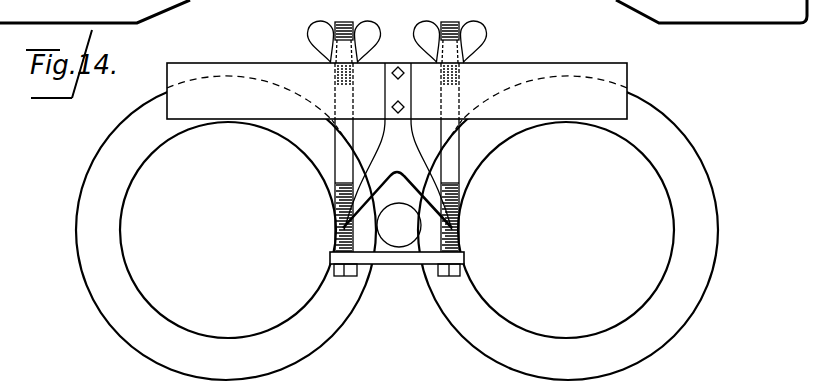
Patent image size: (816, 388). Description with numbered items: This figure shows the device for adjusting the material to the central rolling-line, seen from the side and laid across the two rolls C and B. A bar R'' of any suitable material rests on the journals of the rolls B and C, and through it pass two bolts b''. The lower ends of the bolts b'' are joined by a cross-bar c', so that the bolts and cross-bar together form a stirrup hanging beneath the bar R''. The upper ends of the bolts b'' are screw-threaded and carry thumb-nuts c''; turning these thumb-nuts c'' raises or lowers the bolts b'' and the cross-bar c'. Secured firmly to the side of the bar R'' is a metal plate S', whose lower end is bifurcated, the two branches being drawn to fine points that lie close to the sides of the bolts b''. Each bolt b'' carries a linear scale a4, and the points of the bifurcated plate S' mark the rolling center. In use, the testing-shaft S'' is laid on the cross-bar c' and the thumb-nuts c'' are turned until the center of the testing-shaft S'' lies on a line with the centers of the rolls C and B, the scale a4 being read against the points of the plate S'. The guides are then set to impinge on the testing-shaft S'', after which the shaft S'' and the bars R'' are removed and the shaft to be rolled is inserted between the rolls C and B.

The bar R'' is at (397, 91).
The roll C is at (226, 230).
The roll B is at (568, 230).
The metal plate S' is at (397, 146).
The testing-shaft S'' is at (399, 225).
The bolts b'' is at (396, 136).
The linear scale a4 is at (338, 196).
The thumb-nuts c'' is at (390, 19).
The cross-bar c' is at (397, 273).